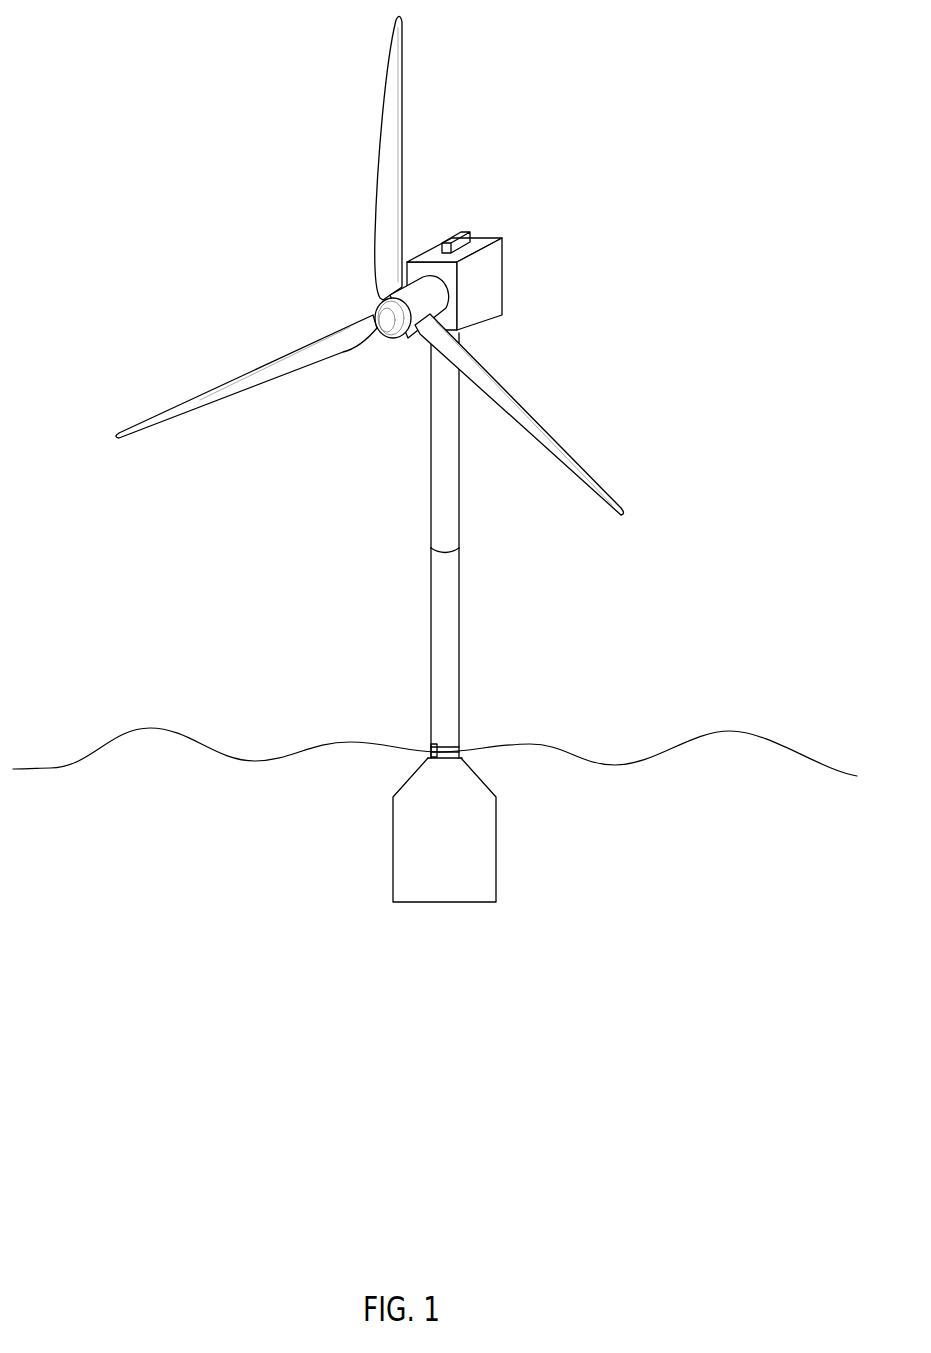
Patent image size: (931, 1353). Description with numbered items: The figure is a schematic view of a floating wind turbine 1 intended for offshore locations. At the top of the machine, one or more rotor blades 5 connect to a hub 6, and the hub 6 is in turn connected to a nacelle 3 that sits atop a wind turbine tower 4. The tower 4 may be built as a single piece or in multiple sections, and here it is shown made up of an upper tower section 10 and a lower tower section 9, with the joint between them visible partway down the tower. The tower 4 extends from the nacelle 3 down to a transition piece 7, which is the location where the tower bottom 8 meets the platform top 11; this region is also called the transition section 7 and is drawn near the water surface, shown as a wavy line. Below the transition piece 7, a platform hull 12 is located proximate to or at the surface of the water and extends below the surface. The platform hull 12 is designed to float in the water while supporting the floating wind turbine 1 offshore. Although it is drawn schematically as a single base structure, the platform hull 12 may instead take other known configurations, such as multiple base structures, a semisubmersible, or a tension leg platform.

The floating wind turbine 1 is at (279, 249).
The nacelle 3 is at (497, 275).
The wind turbine tower 4 is at (451, 545).
The rotor blades 5 is at (395, 110).
The hub 6 is at (438, 302).
The transition piece 7 is at (455, 752).
The tower bottom 8 is at (430, 743).
The tower section 9 is at (433, 660).
The tower section 10 is at (433, 465).
The platform top 11 is at (433, 760).
The platform hull 12 is at (393, 813).